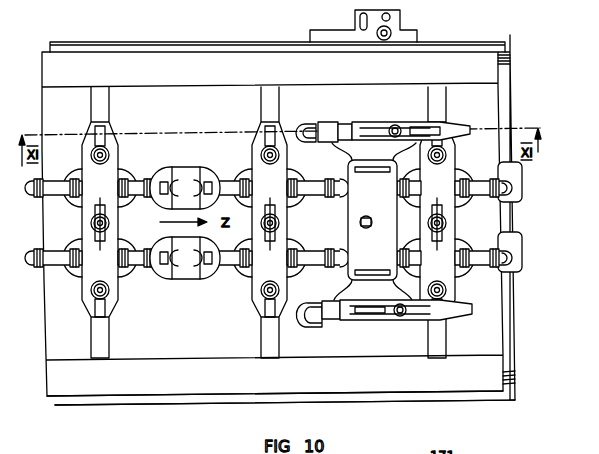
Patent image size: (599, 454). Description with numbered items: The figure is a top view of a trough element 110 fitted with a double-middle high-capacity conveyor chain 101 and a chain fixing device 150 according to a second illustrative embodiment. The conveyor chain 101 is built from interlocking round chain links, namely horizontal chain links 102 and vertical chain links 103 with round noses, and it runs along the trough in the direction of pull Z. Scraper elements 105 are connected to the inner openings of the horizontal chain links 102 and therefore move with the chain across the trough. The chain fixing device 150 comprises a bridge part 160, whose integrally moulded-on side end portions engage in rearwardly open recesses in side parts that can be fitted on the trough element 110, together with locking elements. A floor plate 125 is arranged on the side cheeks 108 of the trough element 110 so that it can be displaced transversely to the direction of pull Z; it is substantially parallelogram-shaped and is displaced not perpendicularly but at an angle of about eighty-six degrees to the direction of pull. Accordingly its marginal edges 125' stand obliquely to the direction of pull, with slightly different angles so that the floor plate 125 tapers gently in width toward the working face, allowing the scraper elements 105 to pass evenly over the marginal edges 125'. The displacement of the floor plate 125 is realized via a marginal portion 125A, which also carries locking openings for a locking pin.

The trough element 110 is at (91, 38).
The side cheeks 108 is at (240, 48).
The marginal portion 125A is at (392, 23).
The chain fixing device 150 is at (304, 101).
The scraper elements 105 is at (262, 176).
The bridge part 160 is at (366, 198).
The conveyor chain 101 is at (55, 272).
The horizontal chain links 102 is at (186, 280).
The vertical chain links 103 is at (228, 268).
The floor plate 125 is at (281, 372).
The marginal edges 125' is at (384, 324).